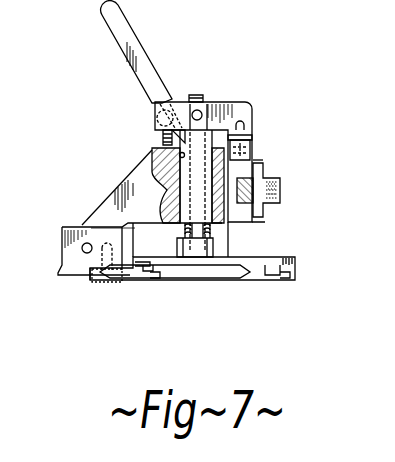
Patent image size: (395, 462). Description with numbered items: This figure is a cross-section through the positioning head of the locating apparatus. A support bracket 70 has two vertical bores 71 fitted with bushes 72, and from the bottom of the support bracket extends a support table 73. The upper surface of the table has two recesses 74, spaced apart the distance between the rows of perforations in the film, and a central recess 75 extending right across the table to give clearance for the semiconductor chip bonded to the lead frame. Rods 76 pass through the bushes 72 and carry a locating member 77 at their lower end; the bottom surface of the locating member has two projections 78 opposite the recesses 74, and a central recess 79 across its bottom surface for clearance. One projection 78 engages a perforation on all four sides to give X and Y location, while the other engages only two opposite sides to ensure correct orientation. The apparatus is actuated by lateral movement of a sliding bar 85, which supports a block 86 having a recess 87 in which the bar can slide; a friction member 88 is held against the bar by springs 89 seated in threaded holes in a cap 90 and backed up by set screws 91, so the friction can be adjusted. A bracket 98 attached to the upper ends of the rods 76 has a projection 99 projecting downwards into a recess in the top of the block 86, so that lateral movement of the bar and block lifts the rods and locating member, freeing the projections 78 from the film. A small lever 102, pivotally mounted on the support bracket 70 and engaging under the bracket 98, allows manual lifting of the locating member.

The lever 102 is at (112, 33).
The bracket 98 is at (212, 102).
The rods 76 is at (196, 95).
The projection 99 is at (251, 140).
The block 86 is at (252, 165).
The recess 87 is at (258, 175).
The friction member 88 is at (256, 214).
The springs 89 is at (268, 205).
The cap 90 is at (263, 163).
The set screws 91 is at (274, 185).
The vertical bores 71 is at (157, 152).
The bushes 72 is at (194, 175).
The support bracket 70 is at (122, 184).
The support table 73 is at (90, 277).
The recesses 74 is at (148, 266).
The central recess 75 is at (218, 276).
The locating member 77 is at (138, 263).
The projections 78 is at (156, 278).
The central recess 79 is at (205, 260).
The sliding bar 85 is at (247, 216).